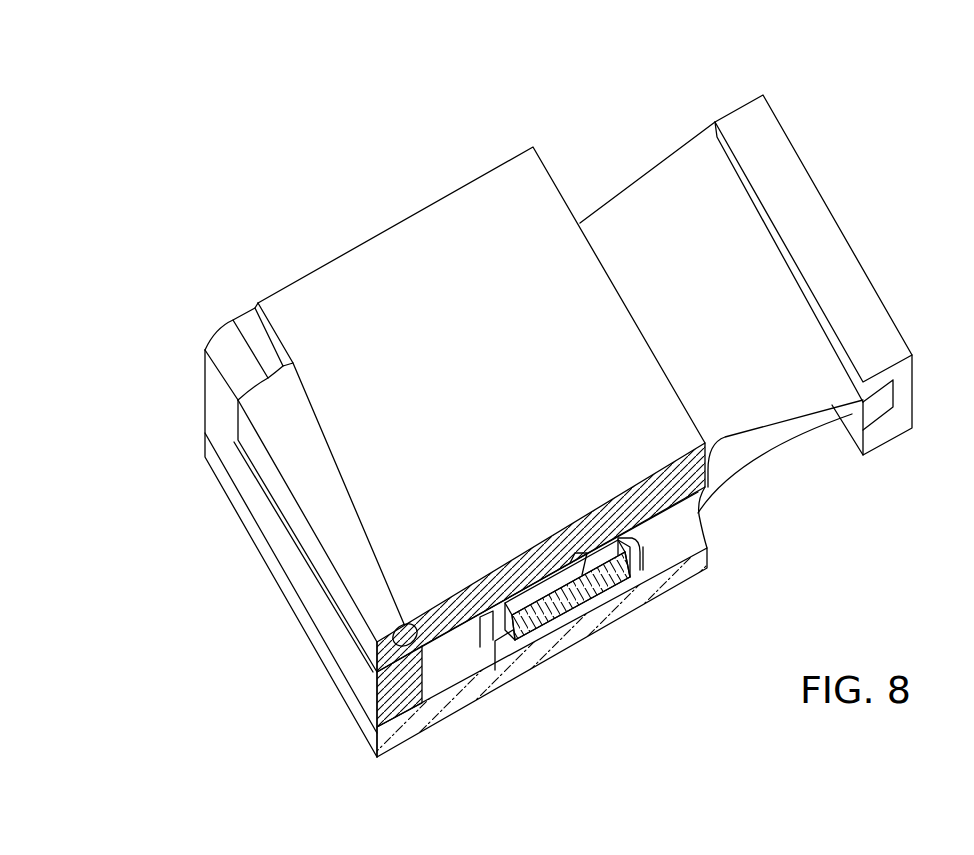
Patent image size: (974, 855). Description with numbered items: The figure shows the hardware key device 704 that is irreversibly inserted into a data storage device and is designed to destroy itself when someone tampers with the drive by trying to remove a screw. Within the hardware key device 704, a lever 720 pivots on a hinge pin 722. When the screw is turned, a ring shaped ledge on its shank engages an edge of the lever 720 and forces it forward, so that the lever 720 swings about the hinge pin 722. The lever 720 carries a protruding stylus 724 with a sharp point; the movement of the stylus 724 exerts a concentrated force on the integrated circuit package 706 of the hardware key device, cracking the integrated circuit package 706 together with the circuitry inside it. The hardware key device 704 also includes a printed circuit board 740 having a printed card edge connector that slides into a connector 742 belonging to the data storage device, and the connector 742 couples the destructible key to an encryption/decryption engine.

The hardware key device 704 is at (377, 197).
The integrated circuit package 706 is at (550, 628).
The lever 720 is at (656, 449).
The hinge pin 722 is at (375, 641).
The stylus 724 is at (620, 598).
The printed circuit board 740 is at (746, 318).
The connector 742 is at (833, 217).